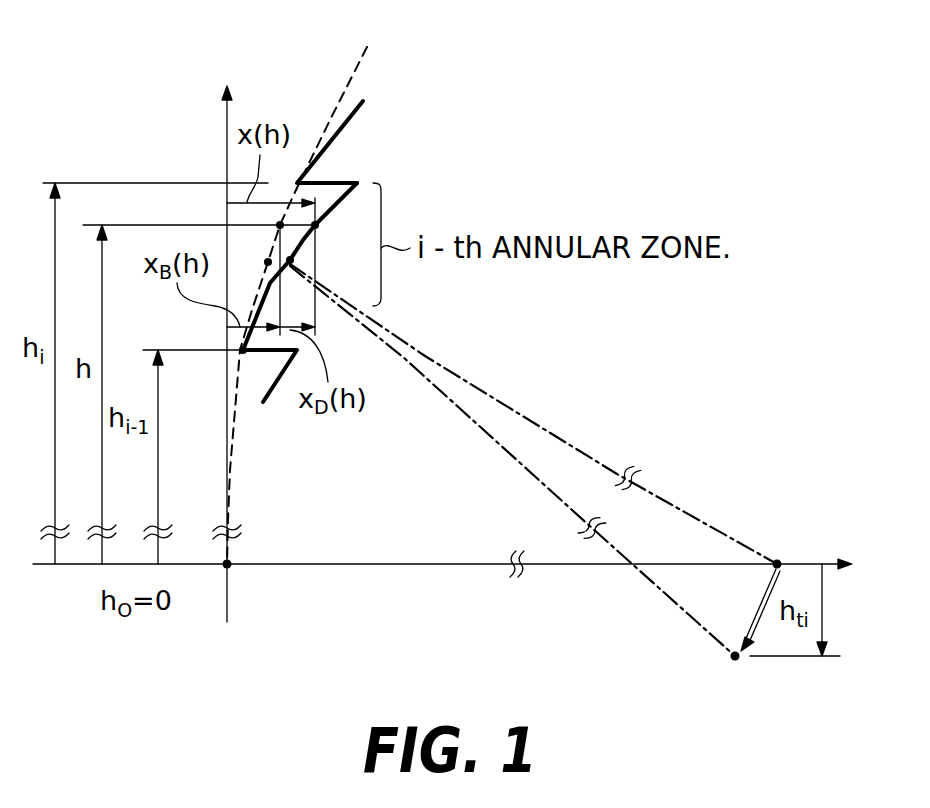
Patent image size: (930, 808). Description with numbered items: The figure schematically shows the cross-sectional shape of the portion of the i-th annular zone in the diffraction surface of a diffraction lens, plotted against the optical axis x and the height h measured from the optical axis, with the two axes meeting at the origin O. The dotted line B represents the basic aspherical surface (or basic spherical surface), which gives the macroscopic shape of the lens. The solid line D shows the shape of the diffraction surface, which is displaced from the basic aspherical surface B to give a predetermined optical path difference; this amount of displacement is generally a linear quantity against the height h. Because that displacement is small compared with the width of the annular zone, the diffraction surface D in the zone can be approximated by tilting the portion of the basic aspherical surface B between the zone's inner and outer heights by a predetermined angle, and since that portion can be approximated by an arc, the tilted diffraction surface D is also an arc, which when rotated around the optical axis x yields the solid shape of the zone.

The basic aspherical surface B is at (352, 78).
The diffraction surface D is at (357, 190).
The origin of coordinate system O is at (216, 580).
The height from the optical axis h is at (227, 338).
The optical axis x is at (452, 565).